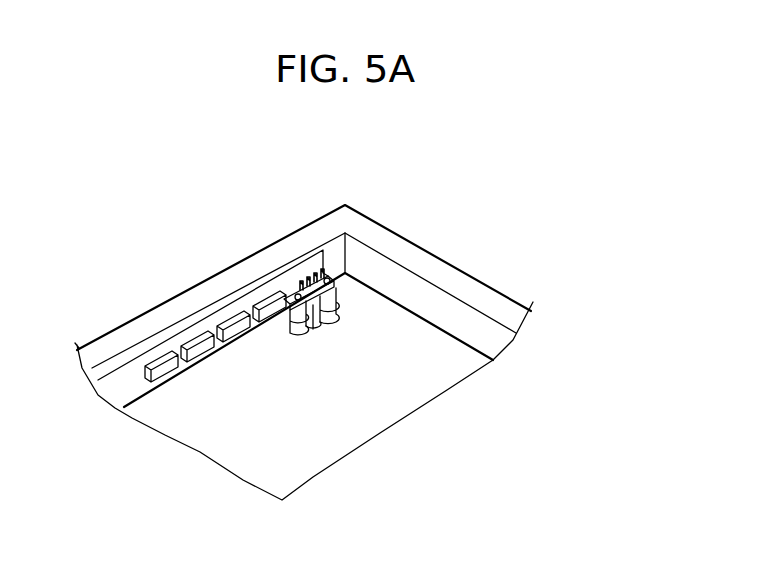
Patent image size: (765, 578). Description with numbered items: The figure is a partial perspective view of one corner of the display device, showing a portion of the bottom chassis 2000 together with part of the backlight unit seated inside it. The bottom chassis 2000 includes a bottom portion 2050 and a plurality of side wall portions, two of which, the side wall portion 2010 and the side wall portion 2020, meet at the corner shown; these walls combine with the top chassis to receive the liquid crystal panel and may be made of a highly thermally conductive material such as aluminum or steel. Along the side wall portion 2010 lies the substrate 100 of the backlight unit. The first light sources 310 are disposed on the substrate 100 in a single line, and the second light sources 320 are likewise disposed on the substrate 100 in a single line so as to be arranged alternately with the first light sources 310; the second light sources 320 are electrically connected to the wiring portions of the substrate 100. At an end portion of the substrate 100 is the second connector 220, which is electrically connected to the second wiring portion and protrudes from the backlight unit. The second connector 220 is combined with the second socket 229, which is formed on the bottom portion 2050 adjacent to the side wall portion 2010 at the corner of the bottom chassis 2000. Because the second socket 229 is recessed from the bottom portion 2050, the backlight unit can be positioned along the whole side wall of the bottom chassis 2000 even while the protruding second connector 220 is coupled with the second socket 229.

The substrate 100 is at (287, 272).
The second connector 220 is at (311, 272).
The second socket 229 is at (303, 330).
The first light sources 310 is at (198, 347).
The second light sources 320 is at (163, 362).
The bottom chassis 2000 is at (335, 324).
The side wall portion 2010 is at (332, 230).
The side wall portion 2020 is at (403, 255).
The bottom portion 2050 is at (375, 343).